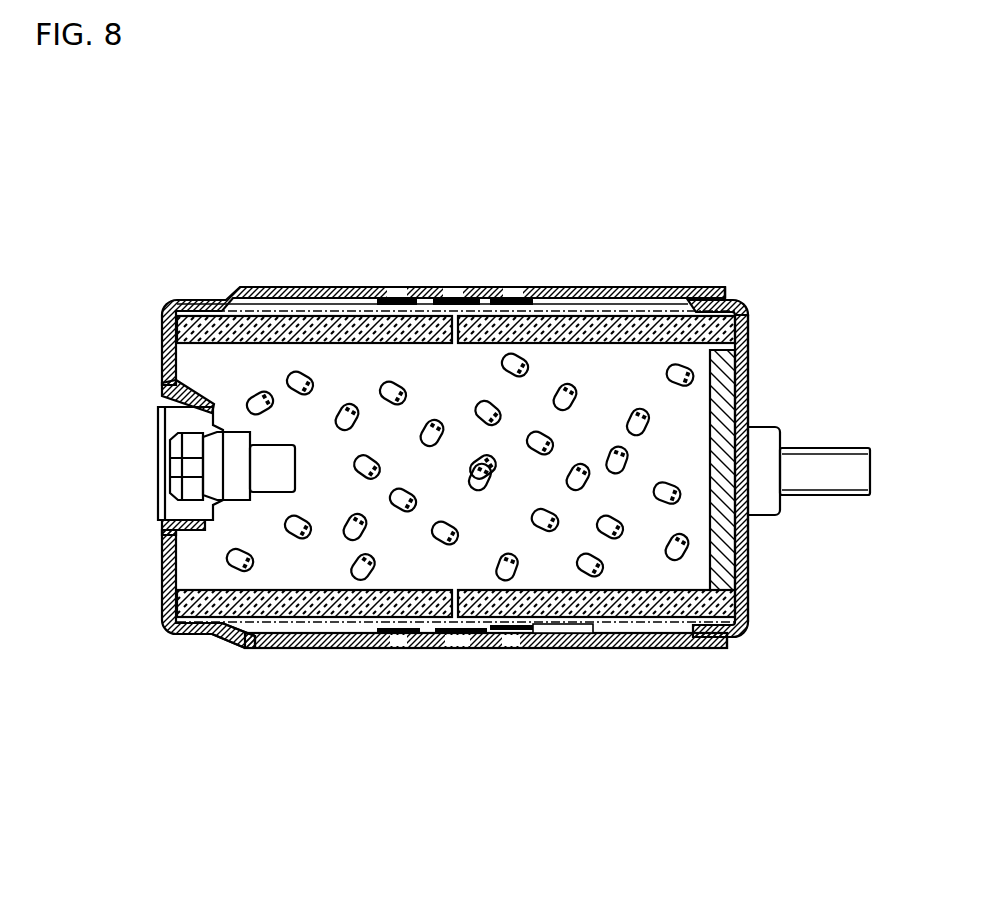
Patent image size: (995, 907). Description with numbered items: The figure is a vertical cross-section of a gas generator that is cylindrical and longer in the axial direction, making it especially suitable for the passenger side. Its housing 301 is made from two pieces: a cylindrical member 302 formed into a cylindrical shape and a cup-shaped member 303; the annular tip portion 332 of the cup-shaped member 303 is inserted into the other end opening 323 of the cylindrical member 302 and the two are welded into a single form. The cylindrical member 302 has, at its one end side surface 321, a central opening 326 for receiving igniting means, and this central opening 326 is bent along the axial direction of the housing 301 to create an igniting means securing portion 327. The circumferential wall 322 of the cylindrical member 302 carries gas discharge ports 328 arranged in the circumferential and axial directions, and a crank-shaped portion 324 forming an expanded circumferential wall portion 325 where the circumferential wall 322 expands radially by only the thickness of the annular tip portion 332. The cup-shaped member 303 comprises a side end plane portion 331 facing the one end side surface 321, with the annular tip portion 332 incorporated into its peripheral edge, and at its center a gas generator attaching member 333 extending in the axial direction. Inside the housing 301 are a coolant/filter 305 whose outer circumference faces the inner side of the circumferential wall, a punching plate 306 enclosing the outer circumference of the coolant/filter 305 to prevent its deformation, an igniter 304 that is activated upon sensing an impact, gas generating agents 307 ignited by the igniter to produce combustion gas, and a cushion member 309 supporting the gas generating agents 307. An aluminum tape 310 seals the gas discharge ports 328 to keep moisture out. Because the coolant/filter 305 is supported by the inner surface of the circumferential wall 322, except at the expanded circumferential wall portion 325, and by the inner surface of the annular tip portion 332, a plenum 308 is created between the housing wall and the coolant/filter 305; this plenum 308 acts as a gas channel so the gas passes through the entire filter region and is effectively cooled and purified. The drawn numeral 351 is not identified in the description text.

The housing 301 is at (827, 706).
The cylindrical member 302 is at (630, 648).
The cup-shaped member 303 is at (748, 613).
The igniter 304 is at (270, 485).
The coolant/filter 305 is at (483, 720).
The punching plate 306 is at (588, 650).
The gas generating agents 307 is at (303, 537).
The plenum 308 is at (560, 304).
The cushion member 309 is at (750, 575).
The aluminum tape 310 is at (485, 624).
The one end side surface 321 is at (160, 570).
The circumferential wall 322 is at (268, 648).
The other end opening 323 is at (727, 298).
The crank-shaped portion 324 is at (232, 290).
The expanded circumferential wall portion 325 is at (338, 287).
The central opening 326 is at (165, 410).
The igniting means securing portion 327 is at (165, 387).
The gas discharge ports 328 is at (450, 292).
The side end plane portion 331 is at (750, 388).
The annular tip portion 332 is at (688, 292).
The gas generator attaching member 333 is at (800, 478).
The contact spot 351 is at (362, 648).